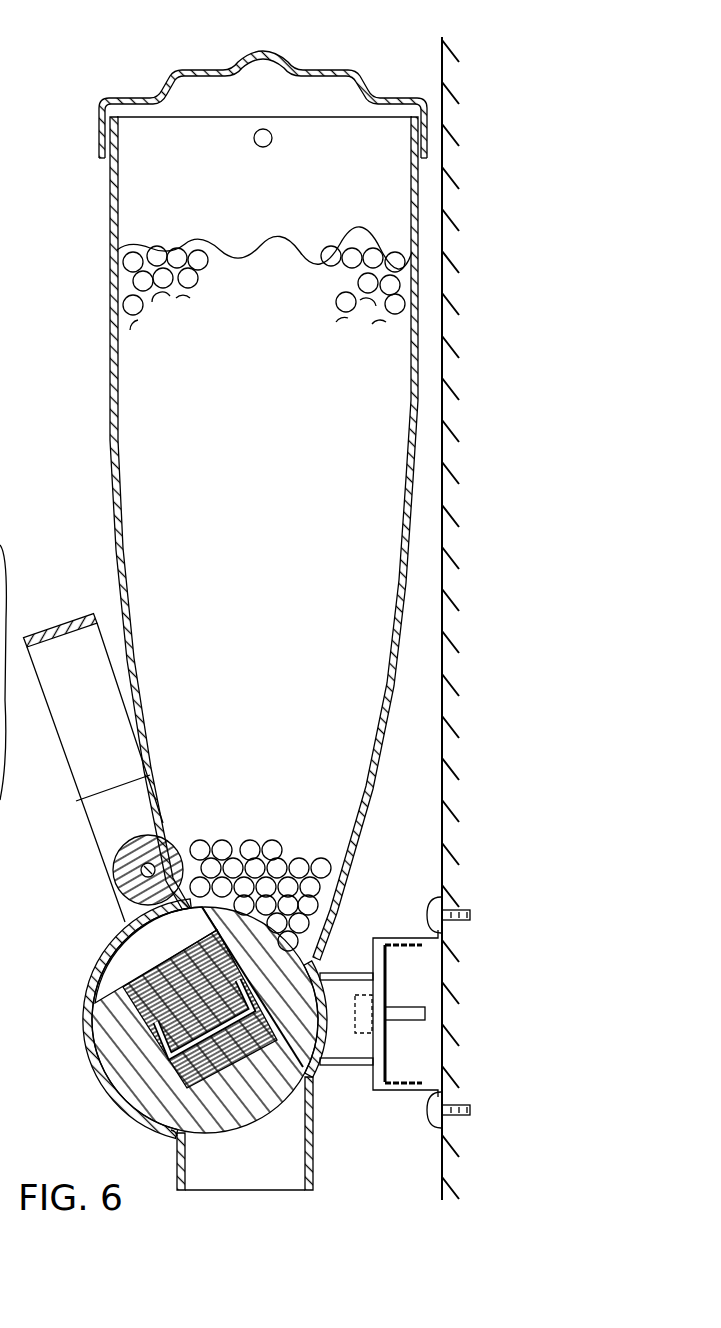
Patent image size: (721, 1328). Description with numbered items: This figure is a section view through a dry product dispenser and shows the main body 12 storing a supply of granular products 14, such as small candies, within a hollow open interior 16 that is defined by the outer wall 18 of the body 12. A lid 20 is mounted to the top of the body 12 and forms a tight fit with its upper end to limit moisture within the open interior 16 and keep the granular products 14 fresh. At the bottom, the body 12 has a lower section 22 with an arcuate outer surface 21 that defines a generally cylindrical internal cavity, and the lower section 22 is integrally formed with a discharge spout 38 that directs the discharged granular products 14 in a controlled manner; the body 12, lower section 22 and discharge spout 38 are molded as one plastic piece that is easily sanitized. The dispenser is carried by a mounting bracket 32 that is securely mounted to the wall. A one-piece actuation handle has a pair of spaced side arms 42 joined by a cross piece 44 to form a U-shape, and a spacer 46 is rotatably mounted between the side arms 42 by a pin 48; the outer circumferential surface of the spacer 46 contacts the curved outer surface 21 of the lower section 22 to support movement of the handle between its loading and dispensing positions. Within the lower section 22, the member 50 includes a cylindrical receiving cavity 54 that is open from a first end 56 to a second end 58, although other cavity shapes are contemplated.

The main body 12 is at (106, 278).
The granular products 14 is at (180, 252).
The open interior 16 is at (136, 178).
The outer wall 18 is at (110, 395).
The lid 20 is at (203, 70).
The arcuate outer surface 21 is at (100, 1090).
The lower section 22 is at (76, 1020).
The mounting bracket 32 is at (382, 937).
The discharge spout 38 is at (247, 1182).
The side arms 42 is at (76, 745).
The cross piece 44 is at (57, 633).
The spacer 46 is at (132, 858).
The pin 48 is at (168, 825).
The member 50 is at (147, 1105).
The receiving cavity 54 is at (122, 953).
The first end 56 is at (277, 1112).
The second end 58 is at (124, 925).